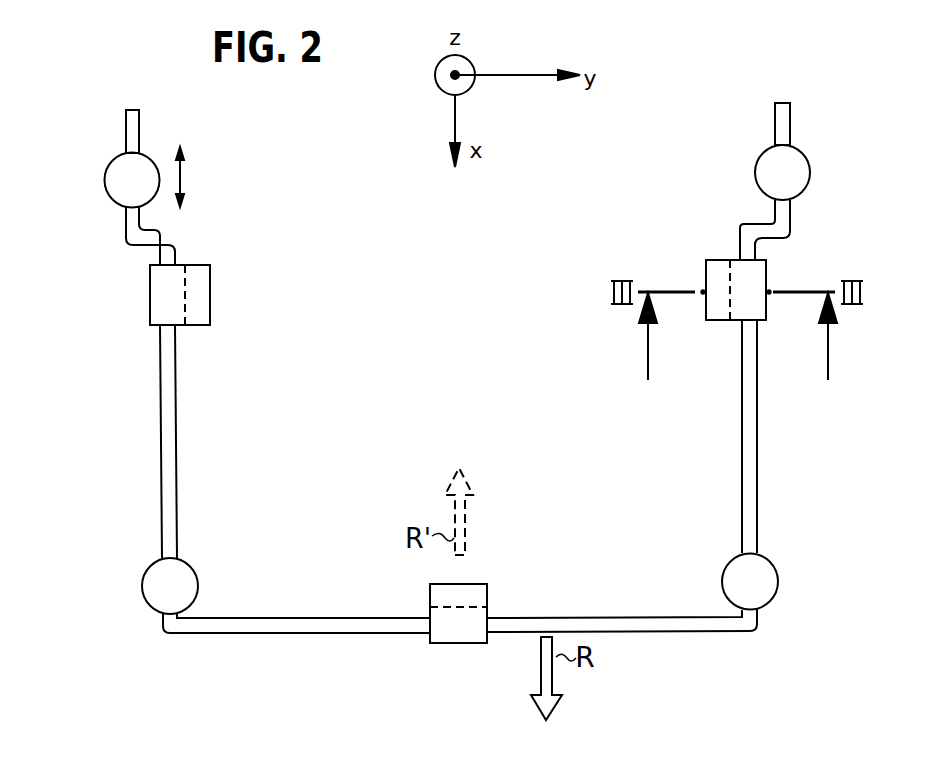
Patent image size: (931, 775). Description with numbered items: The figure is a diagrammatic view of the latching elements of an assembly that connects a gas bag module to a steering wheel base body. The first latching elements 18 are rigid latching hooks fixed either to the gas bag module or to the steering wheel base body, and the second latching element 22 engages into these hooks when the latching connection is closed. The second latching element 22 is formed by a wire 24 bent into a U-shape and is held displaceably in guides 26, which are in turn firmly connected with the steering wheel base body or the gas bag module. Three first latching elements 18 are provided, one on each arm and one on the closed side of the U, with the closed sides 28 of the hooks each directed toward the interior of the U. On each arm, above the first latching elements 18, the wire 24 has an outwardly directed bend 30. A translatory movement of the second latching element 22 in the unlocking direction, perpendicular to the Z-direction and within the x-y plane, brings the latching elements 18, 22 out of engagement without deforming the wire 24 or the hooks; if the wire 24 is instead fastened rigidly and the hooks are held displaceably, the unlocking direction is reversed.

The first latching element 18 is at (197, 308).
The second latching element 22 is at (150, 342).
The wire 24 is at (670, 623).
The guide 26 is at (117, 176).
The closed side 28 is at (212, 282).
The outwardly directed bend 30 is at (128, 243).